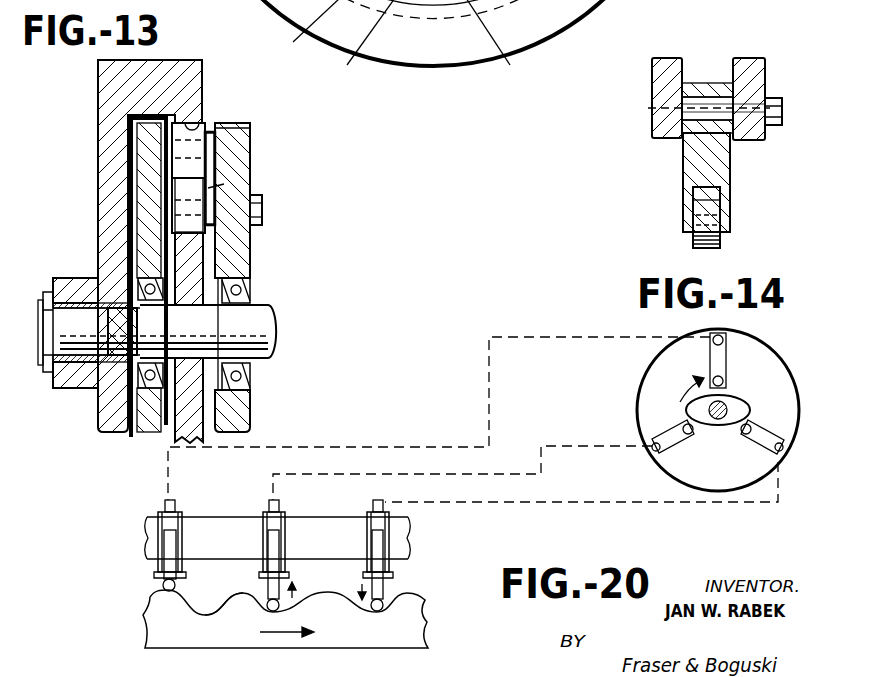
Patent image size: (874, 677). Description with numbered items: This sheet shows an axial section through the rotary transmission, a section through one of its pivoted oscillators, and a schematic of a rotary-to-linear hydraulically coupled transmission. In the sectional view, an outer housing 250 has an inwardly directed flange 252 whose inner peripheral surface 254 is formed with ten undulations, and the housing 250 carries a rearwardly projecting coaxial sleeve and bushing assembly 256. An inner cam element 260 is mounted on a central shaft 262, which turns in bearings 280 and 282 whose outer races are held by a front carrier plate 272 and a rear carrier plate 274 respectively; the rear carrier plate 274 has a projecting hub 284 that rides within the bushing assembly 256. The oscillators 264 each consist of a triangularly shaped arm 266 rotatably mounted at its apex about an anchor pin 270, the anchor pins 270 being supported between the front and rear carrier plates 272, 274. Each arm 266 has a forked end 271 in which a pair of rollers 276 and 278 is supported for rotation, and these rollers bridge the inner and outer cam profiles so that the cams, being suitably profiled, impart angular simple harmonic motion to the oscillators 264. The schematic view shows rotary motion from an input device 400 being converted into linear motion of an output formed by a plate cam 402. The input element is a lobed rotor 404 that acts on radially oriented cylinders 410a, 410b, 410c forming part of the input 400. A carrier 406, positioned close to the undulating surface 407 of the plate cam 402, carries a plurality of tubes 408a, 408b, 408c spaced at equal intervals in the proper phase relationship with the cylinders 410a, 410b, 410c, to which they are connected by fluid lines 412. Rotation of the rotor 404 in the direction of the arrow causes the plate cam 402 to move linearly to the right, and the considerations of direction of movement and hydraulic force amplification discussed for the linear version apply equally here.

In FIG. 13, the outer housing 250 is at (156, 60).
In FIG. 13, the inwardly directed flange 252 is at (200, 122).
In FIG. 13, the inner peripheral surface 254 is at (195, 126).
In FIG. 13, the sleeve and bushing assembly 256 is at (84, 272).
In FIG. 13, the inner cam element 260 is at (190, 247).
In FIG. 13, the central shaft 262 is at (272, 304).
In FIG. 13, the oscillators 264 is at (299, 32).
In FIG. 13, the triangularly shaped arm 266 is at (200, 177).
In FIG. 14, the triangularly shaped arm 266 is at (731, 162).
In FIG. 13, the anchor pin 270 is at (597, 4).
In FIG. 14, the anchor pin 270 is at (784, 107).
In FIG. 13, the forked end 271 is at (226, 186).
In FIG. 14, the forked end 271 is at (722, 209).
In FIG. 13, the front carrier plate 272 is at (250, 150).
In FIG. 14, the front carrier plate 272 is at (766, 74).
In FIG. 13, the rear carrier plate 274 is at (137, 152).
In FIG. 14, the rear carrier plate 274 is at (652, 72).
In FIG. 13, the roller 276 is at (200, 146).
In FIG. 13, the roller 278 is at (195, 223).
In FIG. 14, the roller 278 is at (712, 248).
In FIG. 13, the bearing 280 is at (250, 278).
In FIG. 13, the bearing 282 is at (100, 398).
In FIG. 13, the projecting hub 284 is at (70, 392).
In FIG. 20, the input device 400 is at (636, 378).
In FIG. 20, the lobed rotor 404 is at (737, 398).
In FIG. 20, the radially oriented cylinder 410a is at (727, 367).
In FIG. 20, the radially oriented cylinder 410b is at (677, 445).
In FIG. 20, the radially oriented cylinder 410c is at (763, 428).
In FIG. 20, the fluid lines 412 is at (394, 447).
In FIG. 20, the carrier 406 is at (335, 549).
In FIG. 20, the tube 408a is at (158, 511).
In FIG. 20, the tube 408b is at (263, 511).
In FIG. 20, the tube 408c is at (367, 511).
In FIG. 20, the plate cam 402 is at (218, 644).
In FIG. 20, the undulating surface 407 is at (222, 598).